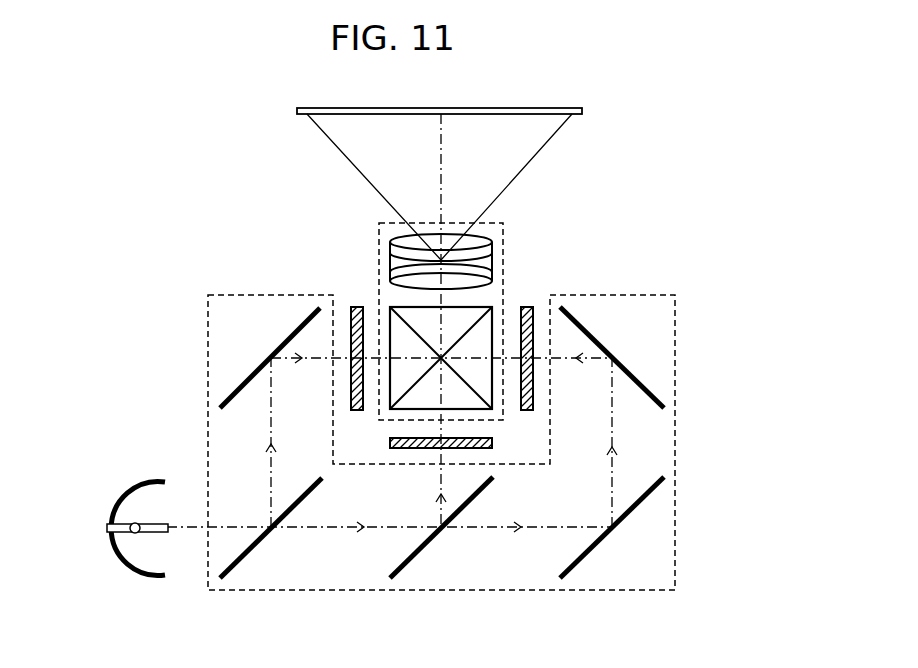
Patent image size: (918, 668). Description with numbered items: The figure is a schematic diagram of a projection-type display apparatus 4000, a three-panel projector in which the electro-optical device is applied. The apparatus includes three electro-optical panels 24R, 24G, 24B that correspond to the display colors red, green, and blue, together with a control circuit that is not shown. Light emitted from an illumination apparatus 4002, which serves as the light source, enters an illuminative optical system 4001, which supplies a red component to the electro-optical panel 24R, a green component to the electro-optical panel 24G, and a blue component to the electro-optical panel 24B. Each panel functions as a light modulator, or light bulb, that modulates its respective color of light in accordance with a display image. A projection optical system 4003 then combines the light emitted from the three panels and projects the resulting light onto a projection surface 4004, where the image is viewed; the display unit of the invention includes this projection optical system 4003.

The projection-type display apparatus 4000 is at (127, 201).
The illuminative optical system 4001 is at (645, 295).
The illumination apparatus 4002 is at (148, 480).
The projection optical system 4003 is at (503, 255).
The projection surface 4004 is at (481, 114).
The electro-optical panel 24R is at (350, 396).
The electro-optical panel 24G is at (394, 449).
The electro-optical panel 24B is at (534, 372).